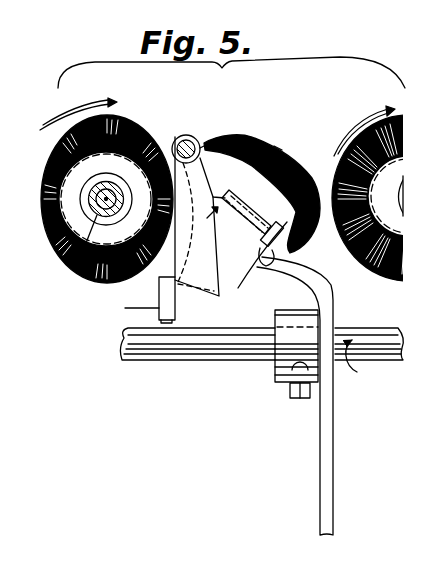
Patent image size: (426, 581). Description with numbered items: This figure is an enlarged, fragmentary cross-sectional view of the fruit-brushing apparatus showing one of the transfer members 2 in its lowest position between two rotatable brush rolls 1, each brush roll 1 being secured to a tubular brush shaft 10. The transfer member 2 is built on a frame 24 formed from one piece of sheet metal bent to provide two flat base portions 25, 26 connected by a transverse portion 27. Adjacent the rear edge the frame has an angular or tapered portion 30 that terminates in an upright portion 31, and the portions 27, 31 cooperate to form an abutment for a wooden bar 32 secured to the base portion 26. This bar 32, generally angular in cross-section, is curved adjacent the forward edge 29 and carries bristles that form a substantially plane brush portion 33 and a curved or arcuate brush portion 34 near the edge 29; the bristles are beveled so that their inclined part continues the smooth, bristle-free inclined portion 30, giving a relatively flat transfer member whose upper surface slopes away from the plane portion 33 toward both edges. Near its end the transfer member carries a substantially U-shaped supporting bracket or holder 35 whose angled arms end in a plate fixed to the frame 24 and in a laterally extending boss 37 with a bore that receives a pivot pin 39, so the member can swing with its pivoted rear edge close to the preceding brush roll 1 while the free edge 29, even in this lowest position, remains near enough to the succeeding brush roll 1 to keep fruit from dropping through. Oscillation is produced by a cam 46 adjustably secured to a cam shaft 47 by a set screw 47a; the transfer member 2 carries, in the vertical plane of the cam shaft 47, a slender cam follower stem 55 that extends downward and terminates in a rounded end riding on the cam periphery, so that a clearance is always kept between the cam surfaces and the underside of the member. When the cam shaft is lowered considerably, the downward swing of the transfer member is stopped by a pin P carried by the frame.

The brush roll 1 is at (113, 116).
The transfer member 2 is at (281, 146).
The brush shaft 10 is at (68, 263).
The pin P is at (132, 305).
The frame 24 is at (208, 216).
The base portion 25 is at (234, 142).
The base portion 26 is at (278, 231).
The transverse portion 27 is at (246, 143).
The forward edge 29 is at (284, 255).
The tapered portion 30 is at (217, 143).
The upright portion 31 is at (226, 141).
The wooden bar 32 is at (246, 207).
The plane brush portion 33 is at (280, 139).
The arcuate brush portion 34 is at (324, 178).
The supporting bracket 35 is at (181, 135).
The boss 37 is at (414, 153).
The pivot pin 39 is at (196, 135).
The cam 46 is at (333, 442).
The cam shaft 47 is at (169, 360).
The set screw 47a is at (289, 395).
The cam follower stem 55 is at (258, 266).